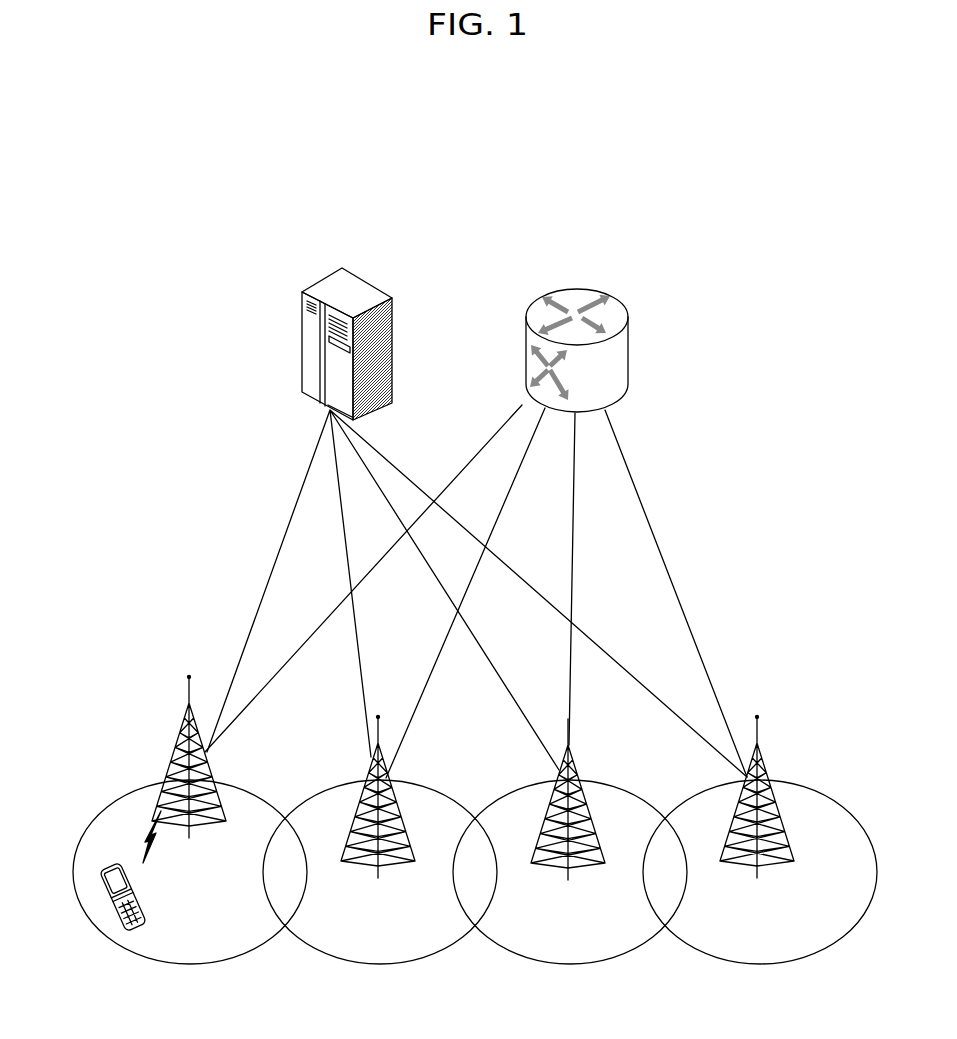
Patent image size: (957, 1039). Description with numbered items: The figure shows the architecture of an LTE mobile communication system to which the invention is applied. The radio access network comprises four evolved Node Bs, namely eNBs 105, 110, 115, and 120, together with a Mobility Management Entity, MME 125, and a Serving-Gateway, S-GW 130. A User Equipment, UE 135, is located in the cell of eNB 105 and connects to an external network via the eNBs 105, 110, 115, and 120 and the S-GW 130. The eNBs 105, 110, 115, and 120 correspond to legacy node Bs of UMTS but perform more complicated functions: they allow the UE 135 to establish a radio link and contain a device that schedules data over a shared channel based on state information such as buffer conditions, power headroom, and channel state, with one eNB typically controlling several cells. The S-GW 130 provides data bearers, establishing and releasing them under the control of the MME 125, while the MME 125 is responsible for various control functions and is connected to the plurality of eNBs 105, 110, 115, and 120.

The evolved Node B (eNB) 105 is at (177, 733).
The evolved Node B (eNB) 110 is at (372, 757).
The evolved Node B (eNB) 115 is at (578, 757).
The evolved Node B (eNB) 120 is at (766, 755).
The Mobility Management Entity (MME) 125 is at (332, 290).
The Serving-Gateway (S-GW) 130 is at (575, 292).
The User Equipment (UE) 135 is at (142, 905).